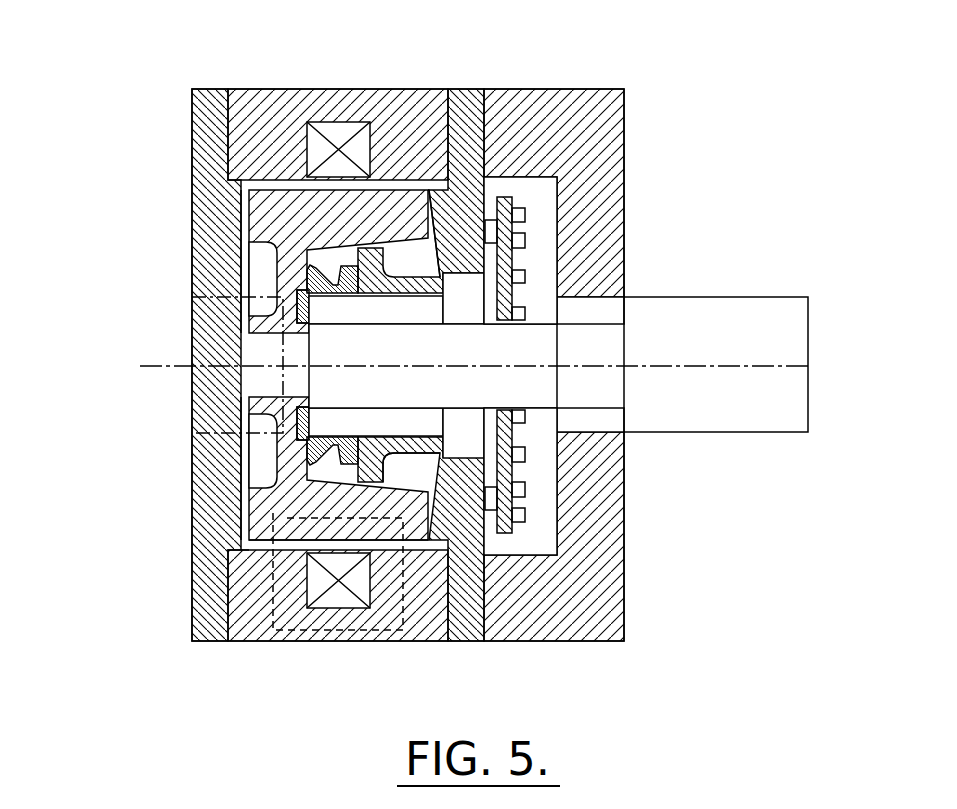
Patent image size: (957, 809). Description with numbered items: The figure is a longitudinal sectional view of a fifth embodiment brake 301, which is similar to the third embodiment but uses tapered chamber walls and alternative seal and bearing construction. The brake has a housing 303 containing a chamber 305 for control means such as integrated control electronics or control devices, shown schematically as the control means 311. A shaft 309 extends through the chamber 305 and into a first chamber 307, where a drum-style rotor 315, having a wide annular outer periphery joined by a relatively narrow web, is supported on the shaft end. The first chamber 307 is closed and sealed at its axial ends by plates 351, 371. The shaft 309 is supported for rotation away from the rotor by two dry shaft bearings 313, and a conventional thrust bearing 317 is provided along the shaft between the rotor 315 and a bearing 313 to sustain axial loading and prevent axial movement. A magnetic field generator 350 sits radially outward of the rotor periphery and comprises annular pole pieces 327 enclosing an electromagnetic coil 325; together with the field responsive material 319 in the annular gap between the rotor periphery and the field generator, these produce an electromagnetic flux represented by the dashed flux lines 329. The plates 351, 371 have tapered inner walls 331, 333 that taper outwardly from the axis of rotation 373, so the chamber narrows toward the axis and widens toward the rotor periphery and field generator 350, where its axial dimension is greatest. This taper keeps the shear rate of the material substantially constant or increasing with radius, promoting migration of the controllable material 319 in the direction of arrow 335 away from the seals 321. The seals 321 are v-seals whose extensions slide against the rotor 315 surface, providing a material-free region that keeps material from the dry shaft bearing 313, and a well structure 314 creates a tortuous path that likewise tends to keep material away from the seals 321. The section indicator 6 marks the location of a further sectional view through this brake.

The fifth embodiment brake 301 is at (138, 87).
The housing 303 is at (593, 533).
The chamber 305 is at (550, 185).
The first chamber 307 is at (243, 272).
The shaft 309 is at (605, 345).
The control means 311 is at (503, 535).
The bearing 313 is at (427, 308).
The well structure 314 is at (407, 468).
The rotor 315 is at (243, 562).
The thrust bearing 317 is at (297, 417).
The field responsive material 319 is at (263, 545).
The seal 321 is at (342, 287).
The electromagnetic coil 325 is at (327, 127).
The annular pole pieces 327 is at (370, 645).
The flux lines 329 is at (262, 645).
The tapered inner wall 331 is at (243, 244).
The tapered inner wall 333 is at (433, 218).
The arrow 335 is at (242, 500).
The magnetic field generator 350 is at (367, 75).
The plate 351 is at (210, 523).
The plate 371 is at (463, 97).
The axis of rotation 373 is at (775, 363).
The section line 6 is at (195, 433).